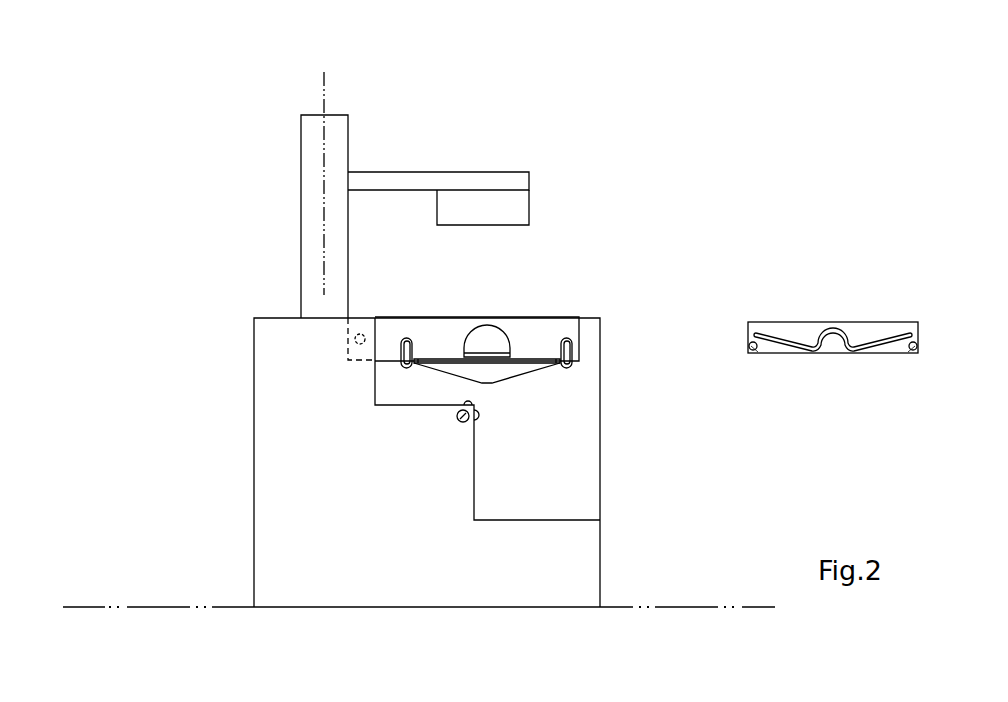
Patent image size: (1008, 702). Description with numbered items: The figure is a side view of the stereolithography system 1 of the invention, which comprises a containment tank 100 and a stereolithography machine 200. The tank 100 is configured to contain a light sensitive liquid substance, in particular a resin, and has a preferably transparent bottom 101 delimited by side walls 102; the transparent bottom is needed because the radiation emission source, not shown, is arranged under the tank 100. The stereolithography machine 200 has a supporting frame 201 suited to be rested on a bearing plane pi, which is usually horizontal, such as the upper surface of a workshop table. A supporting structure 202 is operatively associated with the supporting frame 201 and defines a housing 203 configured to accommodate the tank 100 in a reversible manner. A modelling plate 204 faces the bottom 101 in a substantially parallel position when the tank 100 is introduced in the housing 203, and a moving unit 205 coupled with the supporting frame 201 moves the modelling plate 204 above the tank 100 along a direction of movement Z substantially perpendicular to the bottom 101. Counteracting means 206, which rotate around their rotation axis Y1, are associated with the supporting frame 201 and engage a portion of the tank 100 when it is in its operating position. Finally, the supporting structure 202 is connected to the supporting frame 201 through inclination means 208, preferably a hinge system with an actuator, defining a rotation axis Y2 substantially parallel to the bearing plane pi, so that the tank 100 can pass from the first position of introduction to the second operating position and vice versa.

The stereolithography system 1 is at (592, 113).
The stereolithography machine 200 is at (256, 96).
The supporting frame 201 is at (633, 552).
The supporting structure 202 is at (402, 305).
The housing 203 is at (584, 338).
The modelling plate 204 is at (460, 158).
The moving unit 205 is at (313, 152).
The counteracting means 206 is at (480, 428).
The inclination means 208 is at (325, 343).
The containment tank 100 is at (835, 321).
The bottom 101 is at (832, 353).
The side walls 102 is at (878, 330).
The direction of movement Z is at (332, 183).
The rotation axis Y1 is at (460, 421).
The rotation axis Y2 is at (357, 342).
The bearing plane pi is at (419, 624).